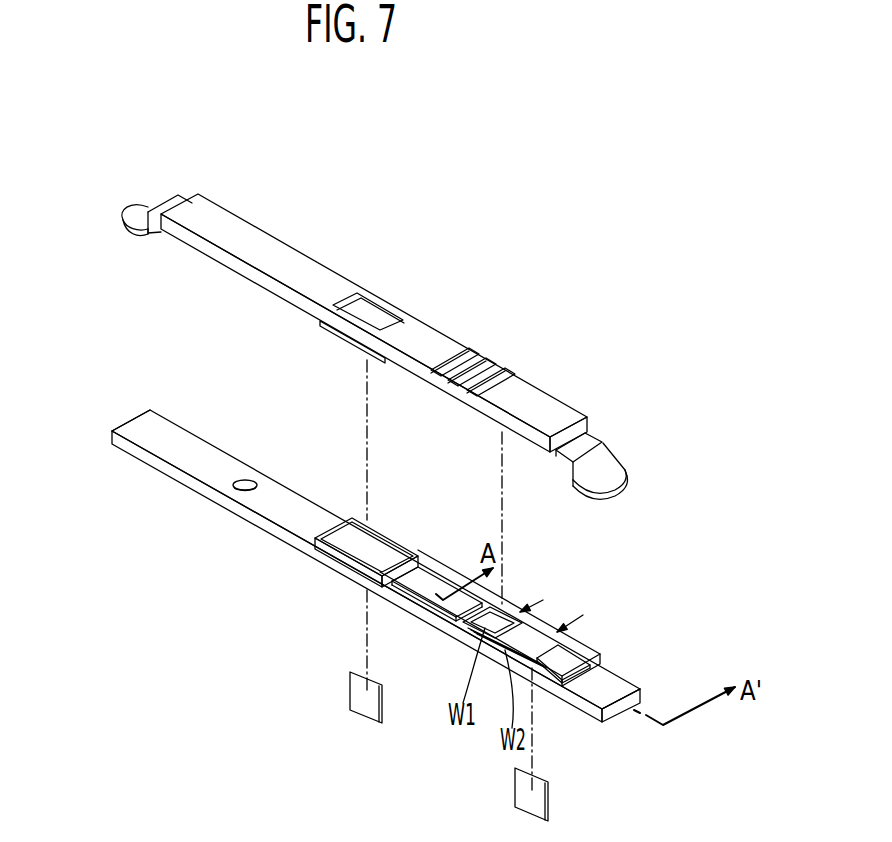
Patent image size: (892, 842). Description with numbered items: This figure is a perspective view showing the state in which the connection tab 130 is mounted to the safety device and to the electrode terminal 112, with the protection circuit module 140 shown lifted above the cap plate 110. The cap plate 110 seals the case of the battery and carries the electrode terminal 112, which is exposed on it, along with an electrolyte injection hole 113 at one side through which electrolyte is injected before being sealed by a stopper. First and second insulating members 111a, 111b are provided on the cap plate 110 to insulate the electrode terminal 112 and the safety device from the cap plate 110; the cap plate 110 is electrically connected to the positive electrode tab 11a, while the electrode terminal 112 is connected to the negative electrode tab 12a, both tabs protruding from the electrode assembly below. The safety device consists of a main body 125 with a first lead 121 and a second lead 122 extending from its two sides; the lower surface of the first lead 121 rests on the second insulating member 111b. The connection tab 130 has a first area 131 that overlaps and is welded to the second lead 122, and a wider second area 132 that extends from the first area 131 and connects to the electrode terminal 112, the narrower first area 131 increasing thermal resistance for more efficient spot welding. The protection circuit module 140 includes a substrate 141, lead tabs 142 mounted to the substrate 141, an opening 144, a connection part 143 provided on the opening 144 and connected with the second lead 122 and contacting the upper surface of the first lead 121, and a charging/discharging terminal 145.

The cap plate 110 is at (642, 690).
The first insulating member 111a is at (578, 667).
The second insulating member 111b is at (318, 538).
The electrode terminal 112 is at (505, 685).
The electrolyte injection hole 113 is at (243, 482).
The first lead 121 is at (372, 538).
The second lead 122 is at (465, 628).
The main body 125 is at (440, 582).
The connection tab 130 is at (582, 578).
The first area 131 is at (500, 610).
The second area 132 is at (540, 627).
The positive electrode tab 11a is at (368, 690).
The negative electrode tab 12a is at (535, 792).
The protection circuit module 140 is at (635, 463).
The substrate 141 is at (560, 405).
The lead tabs 142 is at (143, 207).
The connection part 143 is at (328, 340).
The opening 144 is at (362, 313).
The charging/discharging terminal 145 is at (455, 357).